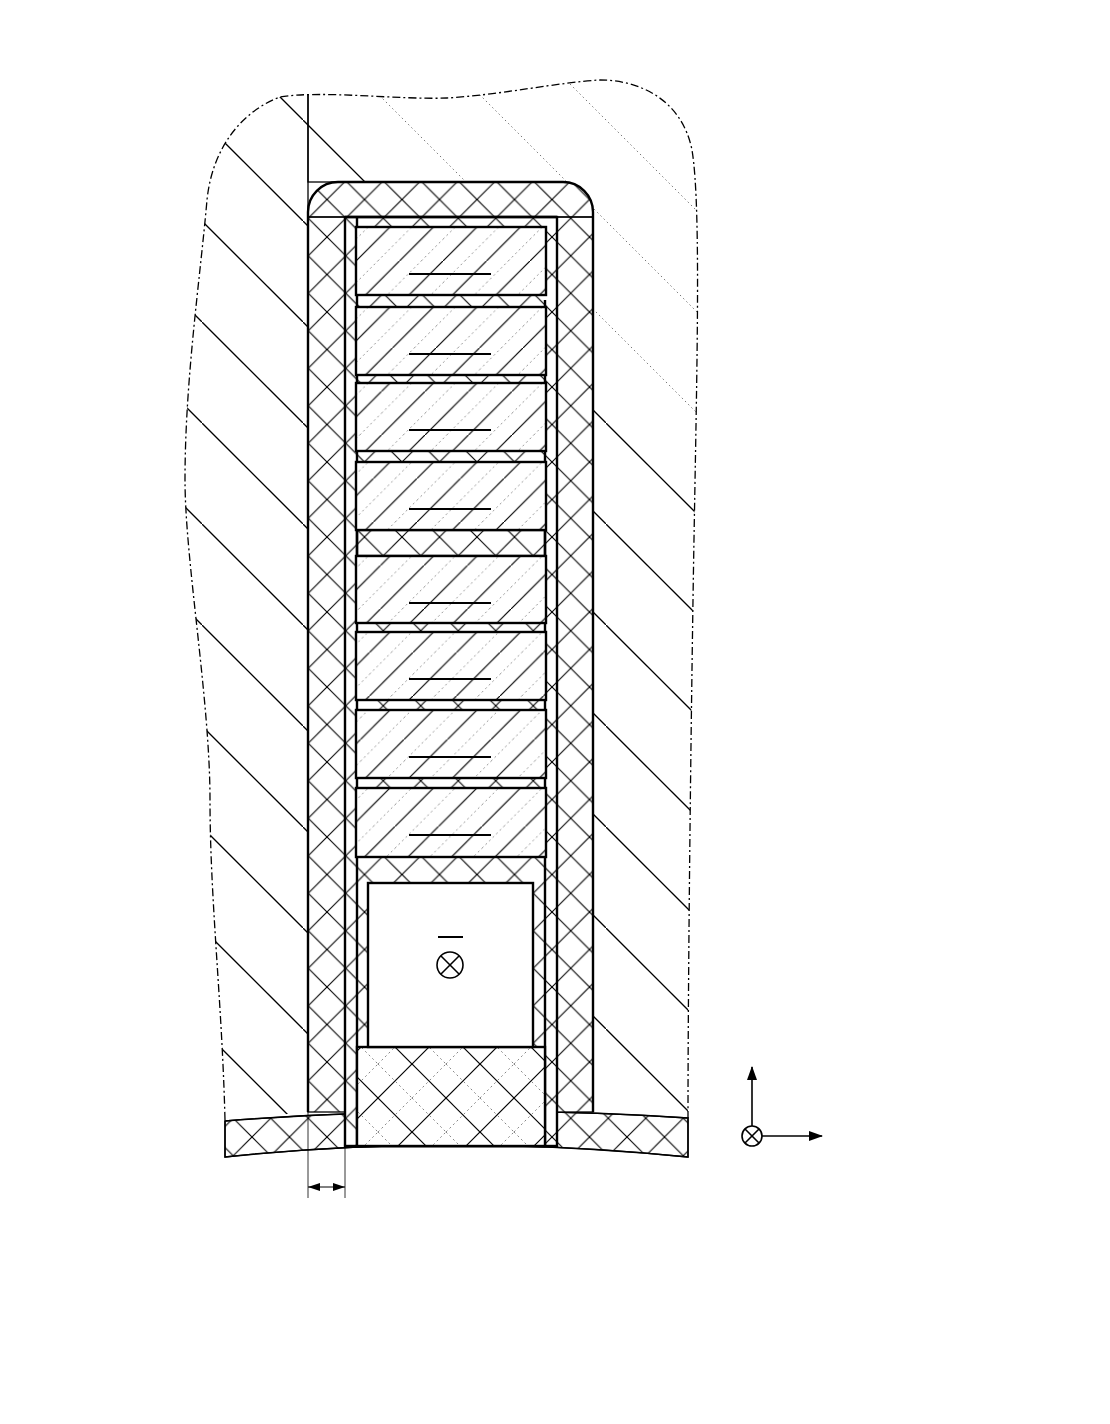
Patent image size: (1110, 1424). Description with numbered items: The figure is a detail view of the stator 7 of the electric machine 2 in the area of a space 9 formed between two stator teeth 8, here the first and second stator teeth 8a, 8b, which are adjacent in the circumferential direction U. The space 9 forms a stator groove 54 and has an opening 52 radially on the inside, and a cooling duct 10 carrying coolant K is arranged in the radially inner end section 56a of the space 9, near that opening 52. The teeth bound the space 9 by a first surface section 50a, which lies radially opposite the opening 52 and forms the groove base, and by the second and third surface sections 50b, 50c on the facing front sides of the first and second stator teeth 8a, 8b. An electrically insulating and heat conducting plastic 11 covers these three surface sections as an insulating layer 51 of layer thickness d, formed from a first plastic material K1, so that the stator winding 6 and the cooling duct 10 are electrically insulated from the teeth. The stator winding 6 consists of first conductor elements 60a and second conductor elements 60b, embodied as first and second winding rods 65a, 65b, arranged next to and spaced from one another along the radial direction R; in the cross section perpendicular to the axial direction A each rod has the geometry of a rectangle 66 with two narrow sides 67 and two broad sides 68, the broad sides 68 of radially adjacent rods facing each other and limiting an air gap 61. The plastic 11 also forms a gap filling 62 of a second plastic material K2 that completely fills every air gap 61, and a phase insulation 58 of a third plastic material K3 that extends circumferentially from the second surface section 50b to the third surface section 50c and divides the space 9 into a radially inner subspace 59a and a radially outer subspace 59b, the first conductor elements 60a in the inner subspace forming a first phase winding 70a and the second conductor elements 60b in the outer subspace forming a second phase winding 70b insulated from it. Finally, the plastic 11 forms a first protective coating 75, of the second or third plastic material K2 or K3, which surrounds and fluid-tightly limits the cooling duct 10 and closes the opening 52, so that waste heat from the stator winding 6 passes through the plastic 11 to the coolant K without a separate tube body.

The electric machine 2 is at (800, 137).
The stator 7 is at (647, 102).
The stator teeth 8 is at (555, 712).
The first stator tooth 8a is at (154, 712).
The second stator tooth 8b is at (702, 470).
The radially inner end section 56a is at (279, 1035).
The stator winding 6 is at (451, 650).
The first surface section 50a is at (525, 195).
The second surface section 50b is at (345, 715).
The third surface section 50c is at (575, 690).
The plastic 11 is at (451, 632).
The insulating layer 51 is at (451, 576).
The first plastic material K1 is at (451, 576).
The gap filling 62 is at (457, 637).
The second plastic material K2 is at (457, 637).
The phase insulation 58 is at (560, 540).
The first protective coating 75 is at (502, 1125).
The third plastic material K3 is at (476, 1136).
The air gap 61 is at (322, 375).
The rectangle 66 is at (560, 234).
The narrow sides 67 is at (314, 263).
The broad sides 68 is at (374, 216).
The first conductor elements 60a is at (516, 706).
The first winding rods 65a is at (516, 706).
The second conductor elements 60b is at (517, 377).
The second winding rods 65b is at (517, 377).
The radially inner subspace 59a is at (560, 740).
The radially outer subspace 59b is at (560, 413).
The first phase winding 70a is at (560, 648).
The second phase winding 70b is at (560, 335).
The cooling duct 10 is at (450, 965).
The coolant K is at (465, 965).
The space 9 is at (456, 1191).
The stator groove 54 is at (392, 1143).
The opening 52 is at (450, 1150).
The layer thickness d is at (332, 1198).
The radial direction R is at (755, 1100).
The axial direction A is at (746, 1148).
The circumferential direction U is at (787, 1140).